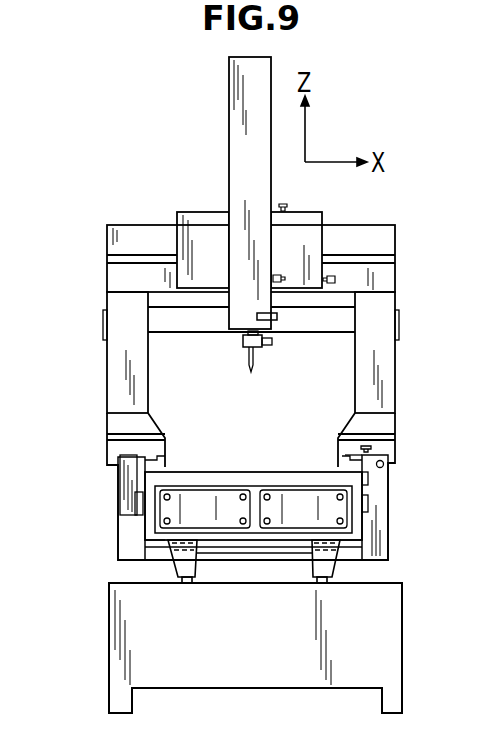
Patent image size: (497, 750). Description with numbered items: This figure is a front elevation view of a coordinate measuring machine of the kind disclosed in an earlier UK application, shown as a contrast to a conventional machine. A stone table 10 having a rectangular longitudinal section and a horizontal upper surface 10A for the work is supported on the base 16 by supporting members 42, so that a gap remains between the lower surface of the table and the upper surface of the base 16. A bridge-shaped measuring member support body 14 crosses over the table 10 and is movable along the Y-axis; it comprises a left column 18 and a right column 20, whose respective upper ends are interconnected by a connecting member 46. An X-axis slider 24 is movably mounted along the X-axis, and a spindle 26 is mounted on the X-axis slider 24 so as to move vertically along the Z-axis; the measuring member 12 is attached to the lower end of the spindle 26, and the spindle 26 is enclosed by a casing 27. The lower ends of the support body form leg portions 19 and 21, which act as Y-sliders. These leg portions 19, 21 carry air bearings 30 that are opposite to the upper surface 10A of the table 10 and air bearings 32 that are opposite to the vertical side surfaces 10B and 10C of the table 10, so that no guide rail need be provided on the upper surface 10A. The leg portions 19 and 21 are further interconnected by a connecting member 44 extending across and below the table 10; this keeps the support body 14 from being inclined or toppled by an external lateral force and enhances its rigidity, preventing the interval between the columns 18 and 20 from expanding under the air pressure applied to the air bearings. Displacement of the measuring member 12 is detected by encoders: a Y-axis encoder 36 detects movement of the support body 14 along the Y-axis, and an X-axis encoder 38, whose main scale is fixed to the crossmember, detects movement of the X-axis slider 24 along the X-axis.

The stone table 10 is at (232, 472).
The upper surface 10A is at (285, 463).
The vertical side surface 10B is at (140, 536).
The vertical side surface 10C is at (375, 562).
The measuring member 12 is at (250, 358).
The measuring member support body 14 is at (98, 413).
The base 16 is at (255, 678).
The left column 18 is at (113, 372).
The leg portion 19 is at (118, 512).
The right column 20 is at (392, 383).
The leg portion 21 is at (382, 518).
The X-axis slider 24 is at (200, 222).
The spindle 26 is at (243, 339).
The casing 27 is at (243, 138).
The air bearings 30 is at (170, 456).
The air bearings 32 is at (140, 492).
The Y-axis encoder 36 is at (372, 481).
The X-axis encoder 38 is at (108, 255).
The supporting members 42 is at (182, 565).
The connecting member 44 is at (257, 550).
The connecting member 46 is at (322, 322).